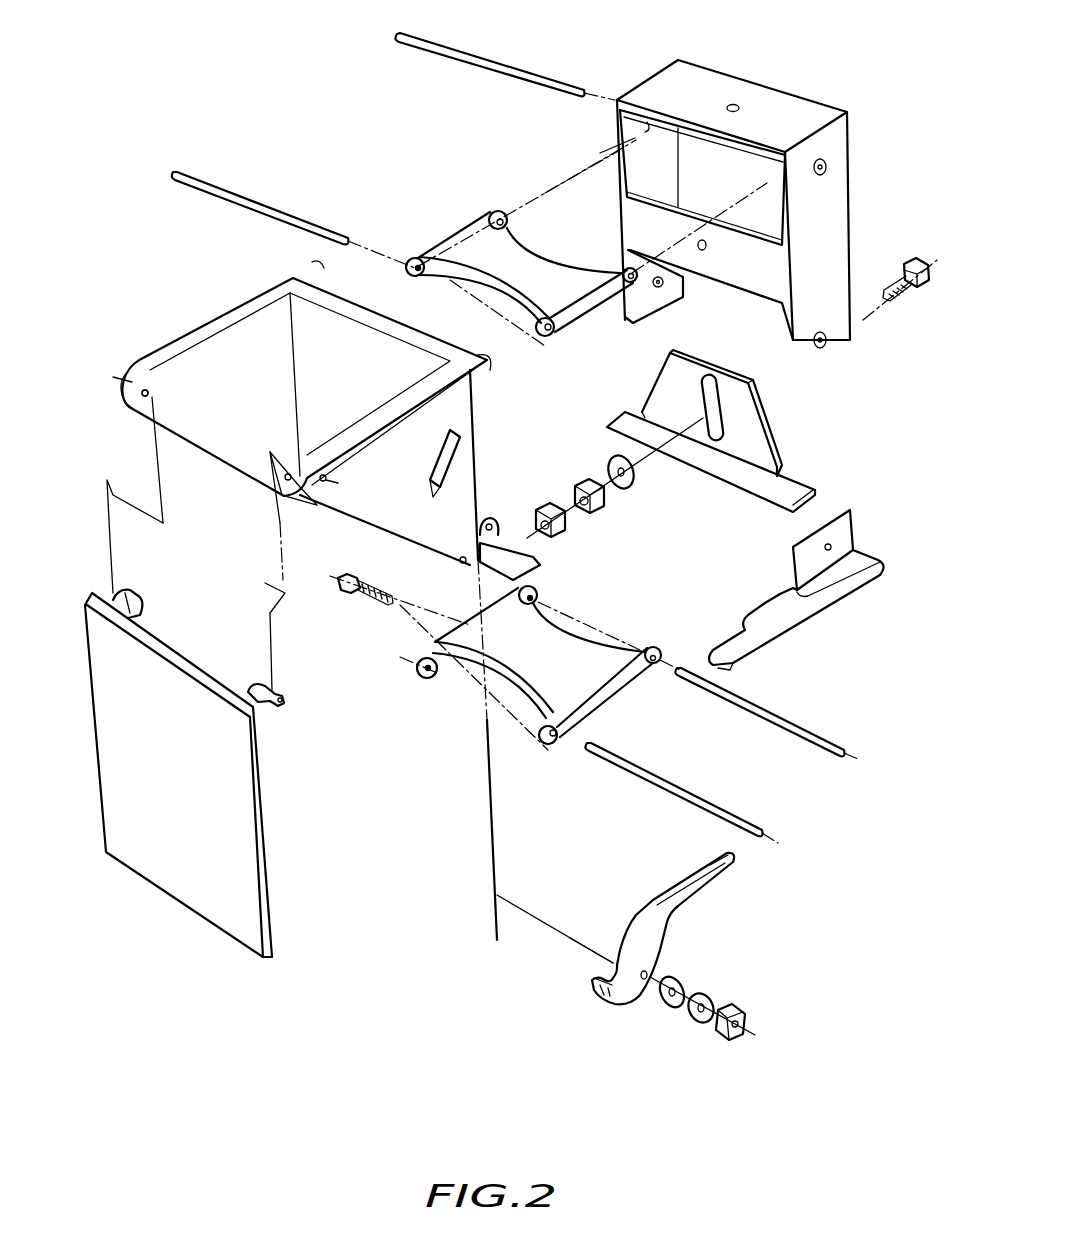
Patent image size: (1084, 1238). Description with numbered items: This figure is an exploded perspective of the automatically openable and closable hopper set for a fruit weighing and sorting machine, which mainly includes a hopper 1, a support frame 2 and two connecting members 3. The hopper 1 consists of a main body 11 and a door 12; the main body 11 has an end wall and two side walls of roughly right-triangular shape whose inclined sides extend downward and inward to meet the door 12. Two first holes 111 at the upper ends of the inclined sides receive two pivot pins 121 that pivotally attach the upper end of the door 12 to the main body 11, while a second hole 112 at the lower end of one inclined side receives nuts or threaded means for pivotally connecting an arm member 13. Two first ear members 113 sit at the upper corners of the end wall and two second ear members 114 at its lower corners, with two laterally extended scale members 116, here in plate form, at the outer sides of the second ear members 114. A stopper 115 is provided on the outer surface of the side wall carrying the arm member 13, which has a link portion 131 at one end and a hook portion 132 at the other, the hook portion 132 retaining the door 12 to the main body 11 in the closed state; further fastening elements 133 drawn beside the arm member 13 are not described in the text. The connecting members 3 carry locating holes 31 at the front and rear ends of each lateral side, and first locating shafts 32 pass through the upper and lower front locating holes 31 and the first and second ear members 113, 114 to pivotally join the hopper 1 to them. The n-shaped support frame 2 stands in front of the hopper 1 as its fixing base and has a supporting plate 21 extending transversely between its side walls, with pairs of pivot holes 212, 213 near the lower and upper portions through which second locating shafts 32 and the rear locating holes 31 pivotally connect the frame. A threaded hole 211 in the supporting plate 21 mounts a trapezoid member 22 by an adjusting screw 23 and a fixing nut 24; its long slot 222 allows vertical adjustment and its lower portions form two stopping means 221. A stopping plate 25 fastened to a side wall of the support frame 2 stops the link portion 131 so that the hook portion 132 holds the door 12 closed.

The hopper 1 is at (200, 300).
The main body 11 is at (253, 338).
The first holes 111 is at (145, 388).
The second hole 112 is at (460, 565).
The first ear members 113 is at (490, 370).
The second ear members 114 is at (495, 518).
The stopper 115 is at (425, 475).
The scale members 116 is at (530, 572).
The door 12 is at (258, 890).
The pivot pins 121 is at (285, 700).
The arm member 13 is at (640, 922).
The link portion 131 is at (735, 870).
The hook portion 132 is at (592, 985).
The fasteners (washers and nut) 133 is at (720, 1055).
The support frame 2 is at (720, 95).
The supporting plate 21 is at (645, 223).
The threaded hole 211 is at (706, 246).
The pivot holes 212 is at (825, 345).
The pivot holes 213 is at (828, 165).
The trapezoid member 22 is at (755, 435).
The stopping means 221 is at (812, 487).
The long slot 222 is at (713, 410).
The adjusting screw 23 is at (898, 296).
The fixing nut 24 is at (635, 503).
The stopping plate 25 is at (830, 590).
The connecting members 3 is at (475, 225).
The locating holes 31 is at (413, 258).
The locating shafts 32 is at (260, 205).